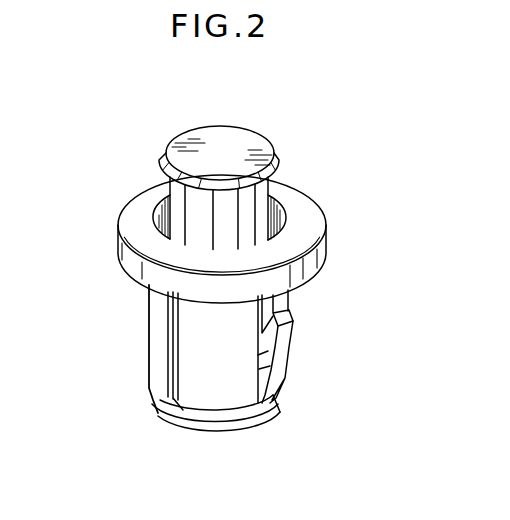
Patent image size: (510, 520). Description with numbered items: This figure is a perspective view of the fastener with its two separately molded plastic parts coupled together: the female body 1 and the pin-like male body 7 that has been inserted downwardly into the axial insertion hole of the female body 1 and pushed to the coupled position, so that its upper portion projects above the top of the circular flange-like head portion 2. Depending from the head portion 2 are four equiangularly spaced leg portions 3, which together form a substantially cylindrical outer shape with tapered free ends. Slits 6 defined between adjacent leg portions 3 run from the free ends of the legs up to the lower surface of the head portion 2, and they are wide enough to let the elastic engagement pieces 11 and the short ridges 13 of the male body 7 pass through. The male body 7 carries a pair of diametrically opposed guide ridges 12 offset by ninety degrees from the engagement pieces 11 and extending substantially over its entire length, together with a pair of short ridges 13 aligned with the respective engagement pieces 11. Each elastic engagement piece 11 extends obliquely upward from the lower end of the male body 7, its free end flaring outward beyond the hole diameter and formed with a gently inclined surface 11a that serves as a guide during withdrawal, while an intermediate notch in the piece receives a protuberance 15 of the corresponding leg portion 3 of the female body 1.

The female body 1 is at (145, 301).
The head portion 2 is at (118, 221).
The leg portions 3 is at (216, 396).
The slits 6 is at (167, 328).
The male body 7 is at (165, 149).
The elastic engagement pieces 11 is at (290, 336).
The gently inclined surface 11a is at (284, 306).
The guide ridges 12 is at (189, 215).
The short ridges 13 is at (255, 213).
The protuberance 15 is at (262, 370).